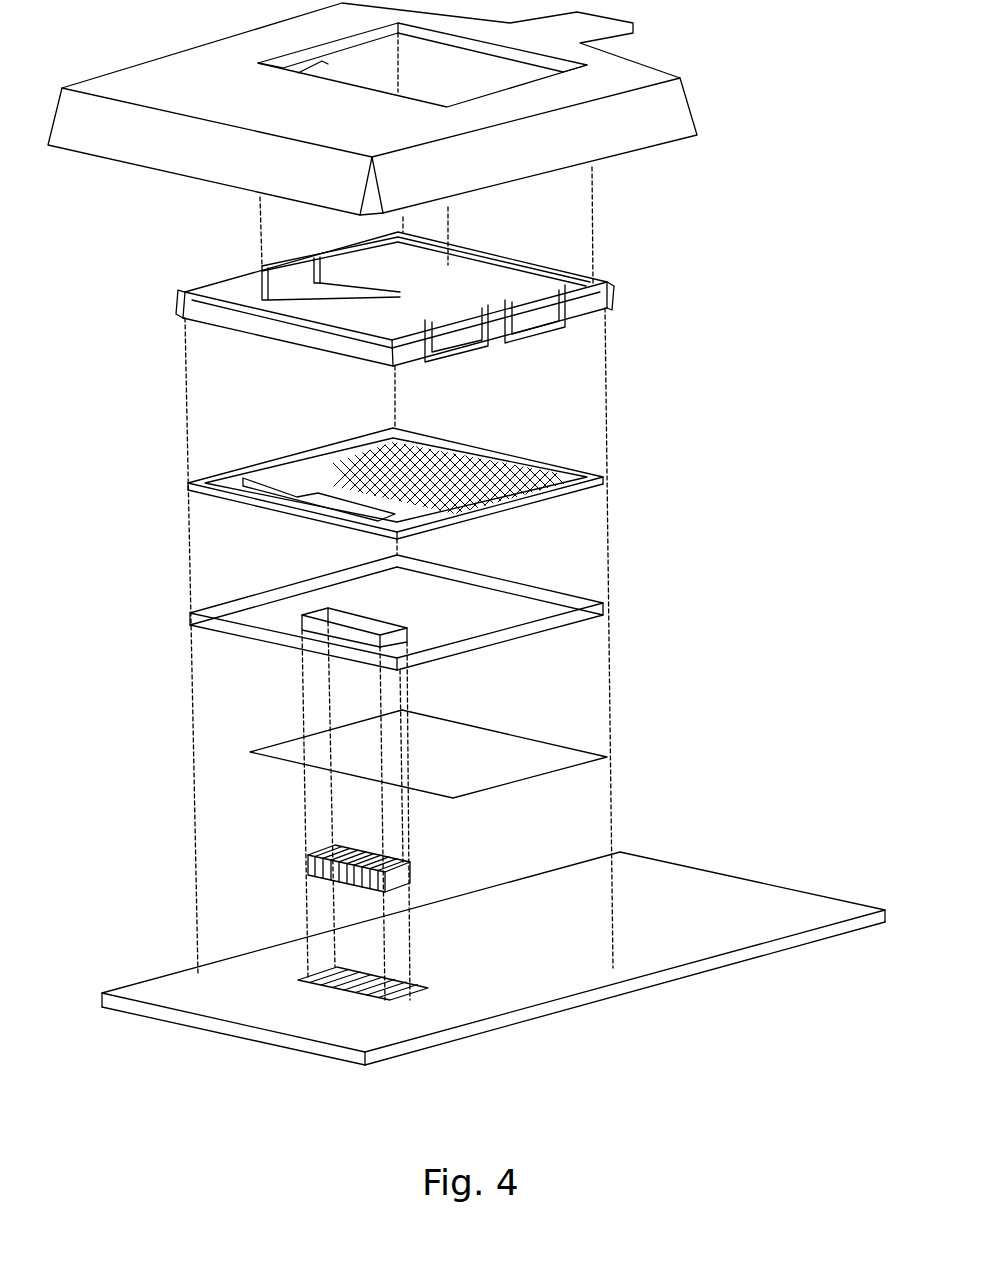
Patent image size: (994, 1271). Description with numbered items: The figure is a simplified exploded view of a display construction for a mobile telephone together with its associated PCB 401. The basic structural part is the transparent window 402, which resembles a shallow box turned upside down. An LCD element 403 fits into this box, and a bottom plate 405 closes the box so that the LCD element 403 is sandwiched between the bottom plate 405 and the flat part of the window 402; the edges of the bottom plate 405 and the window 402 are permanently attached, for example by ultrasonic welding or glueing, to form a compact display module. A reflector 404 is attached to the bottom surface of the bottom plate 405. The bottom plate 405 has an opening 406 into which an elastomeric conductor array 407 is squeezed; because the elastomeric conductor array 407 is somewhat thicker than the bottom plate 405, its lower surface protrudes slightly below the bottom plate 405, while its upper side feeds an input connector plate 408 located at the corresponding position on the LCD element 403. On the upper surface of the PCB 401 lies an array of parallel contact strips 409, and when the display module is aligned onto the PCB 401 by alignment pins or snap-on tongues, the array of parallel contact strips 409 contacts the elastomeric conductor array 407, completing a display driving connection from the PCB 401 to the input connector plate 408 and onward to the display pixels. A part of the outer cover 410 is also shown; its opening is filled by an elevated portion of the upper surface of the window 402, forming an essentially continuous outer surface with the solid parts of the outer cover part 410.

The PCB 401 is at (153, 988).
The transparent window 402 is at (178, 296).
The LCD element 403 is at (253, 466).
The reflector 404 is at (280, 752).
The bottom plate 405 is at (223, 608).
The opening 406 is at (323, 623).
The elastomeric conductor array 407 is at (308, 860).
The input connector plate 408 is at (327, 502).
The array of parallel contact strips 409 is at (308, 978).
The outer cover part 410 is at (127, 75).